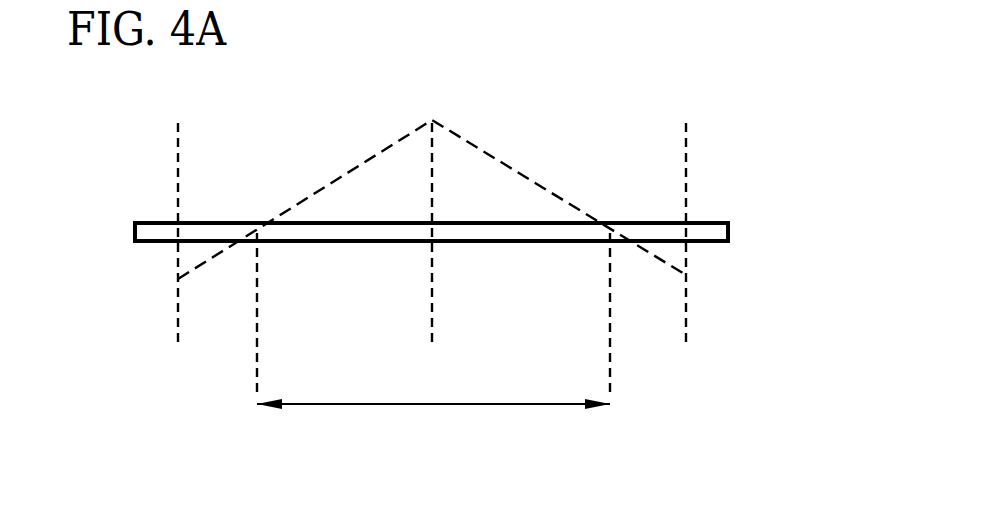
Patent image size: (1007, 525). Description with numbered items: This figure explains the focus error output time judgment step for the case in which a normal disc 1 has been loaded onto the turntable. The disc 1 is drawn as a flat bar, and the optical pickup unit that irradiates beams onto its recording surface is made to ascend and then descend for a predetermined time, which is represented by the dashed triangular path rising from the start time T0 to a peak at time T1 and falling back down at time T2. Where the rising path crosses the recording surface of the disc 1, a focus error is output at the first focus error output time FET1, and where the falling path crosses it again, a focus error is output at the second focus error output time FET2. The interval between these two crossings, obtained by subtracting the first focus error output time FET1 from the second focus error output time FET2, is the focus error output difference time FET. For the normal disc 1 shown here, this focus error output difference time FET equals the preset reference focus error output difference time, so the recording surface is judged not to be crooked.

The disc 1 is at (728, 233).
The start time T0 is at (180, 255).
The focus peak time T1 is at (432, 255).
The end time T2 is at (687, 255).
The first focus error output time FET1 is at (255, 314).
The second focus error output time FET2 is at (611, 314).
The focus error output difference time FET is at (433, 424).